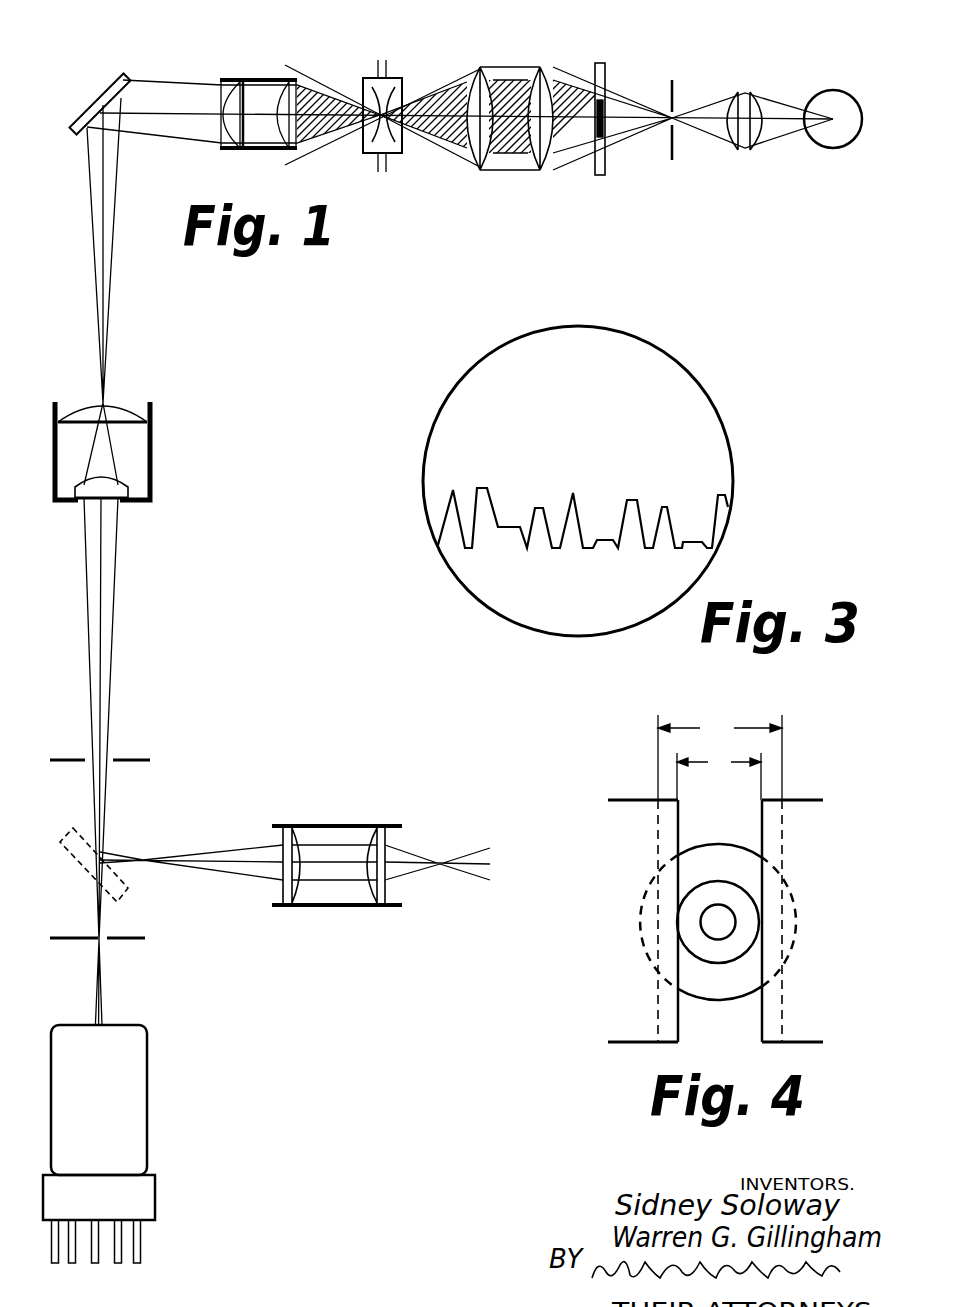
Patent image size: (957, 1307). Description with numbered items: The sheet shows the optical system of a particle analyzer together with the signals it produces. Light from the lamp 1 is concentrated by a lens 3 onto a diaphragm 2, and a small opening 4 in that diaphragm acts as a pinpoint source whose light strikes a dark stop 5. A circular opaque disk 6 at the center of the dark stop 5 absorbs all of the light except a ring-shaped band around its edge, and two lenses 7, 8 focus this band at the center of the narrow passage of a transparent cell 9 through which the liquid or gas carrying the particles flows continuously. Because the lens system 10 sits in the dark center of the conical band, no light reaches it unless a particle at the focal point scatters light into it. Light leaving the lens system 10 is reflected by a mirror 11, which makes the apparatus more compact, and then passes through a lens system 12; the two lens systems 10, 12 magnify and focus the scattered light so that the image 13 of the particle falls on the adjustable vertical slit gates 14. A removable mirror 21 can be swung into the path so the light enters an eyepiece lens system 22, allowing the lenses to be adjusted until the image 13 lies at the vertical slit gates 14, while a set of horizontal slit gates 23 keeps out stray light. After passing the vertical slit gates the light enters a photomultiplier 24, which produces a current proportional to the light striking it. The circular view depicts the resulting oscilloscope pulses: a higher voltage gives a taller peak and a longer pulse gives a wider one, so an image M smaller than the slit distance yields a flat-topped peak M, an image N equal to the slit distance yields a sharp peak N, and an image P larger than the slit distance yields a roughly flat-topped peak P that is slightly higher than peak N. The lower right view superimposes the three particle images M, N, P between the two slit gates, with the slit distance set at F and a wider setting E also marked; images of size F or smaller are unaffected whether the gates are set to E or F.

In FIG. 1, the lamp 1 is at (834, 144).
In FIG. 1, the diaphragm 2 is at (676, 98).
In FIG. 1, the lens 3 is at (759, 110).
In FIG. 1, the small opening 4 is at (671, 125).
In FIG. 1, the dark stop 5 is at (598, 63).
In FIG. 1, the circular opaque disk 6 is at (606, 104).
In FIG. 1, the lens 7 is at (543, 67).
In FIG. 1, the lens 8 is at (479, 67).
In FIG. 1, the transparent cell 9 is at (358, 77).
In FIG. 1, the lens system 10 is at (249, 78).
In FIG. 1, the mirror 11 is at (84, 108).
In FIG. 1, the lens system 12 is at (154, 446).
In FIG. 1, the image 13 is at (98, 936).
In FIG. 1, the adjustable vertical slit gates 14 is at (62, 942).
In FIG. 1, the removable mirror 21 is at (72, 836).
In FIG. 1, the eyepiece lens system 22 is at (345, 823).
In FIG. 1, the horizontal slit gates 23 is at (62, 758).
In FIG. 1, the photomultiplier 24 is at (148, 1077).
In FIG. 3, the particle image N / peak N is at (447, 506).
In FIG. 4, the particle image N / peak N is at (718, 921).
In FIG. 3, the particle image P / peak P is at (493, 503).
In FIG. 4, the particle image P / peak P is at (718, 922).
In FIG. 3, the particle image M / peak M is at (527, 508).
In FIG. 4, the particle image M / peak M is at (718, 922).
In FIG. 4, the slit distance E is at (720, 730).
In FIG. 4, the slit distance F is at (719, 763).